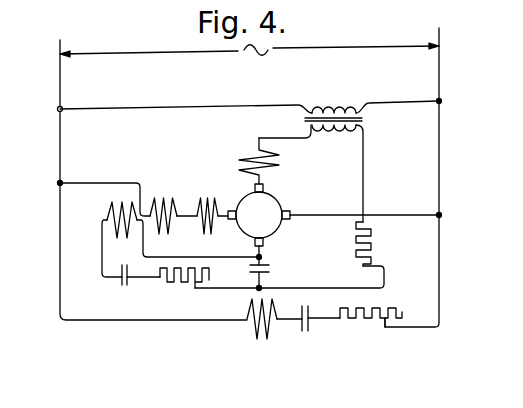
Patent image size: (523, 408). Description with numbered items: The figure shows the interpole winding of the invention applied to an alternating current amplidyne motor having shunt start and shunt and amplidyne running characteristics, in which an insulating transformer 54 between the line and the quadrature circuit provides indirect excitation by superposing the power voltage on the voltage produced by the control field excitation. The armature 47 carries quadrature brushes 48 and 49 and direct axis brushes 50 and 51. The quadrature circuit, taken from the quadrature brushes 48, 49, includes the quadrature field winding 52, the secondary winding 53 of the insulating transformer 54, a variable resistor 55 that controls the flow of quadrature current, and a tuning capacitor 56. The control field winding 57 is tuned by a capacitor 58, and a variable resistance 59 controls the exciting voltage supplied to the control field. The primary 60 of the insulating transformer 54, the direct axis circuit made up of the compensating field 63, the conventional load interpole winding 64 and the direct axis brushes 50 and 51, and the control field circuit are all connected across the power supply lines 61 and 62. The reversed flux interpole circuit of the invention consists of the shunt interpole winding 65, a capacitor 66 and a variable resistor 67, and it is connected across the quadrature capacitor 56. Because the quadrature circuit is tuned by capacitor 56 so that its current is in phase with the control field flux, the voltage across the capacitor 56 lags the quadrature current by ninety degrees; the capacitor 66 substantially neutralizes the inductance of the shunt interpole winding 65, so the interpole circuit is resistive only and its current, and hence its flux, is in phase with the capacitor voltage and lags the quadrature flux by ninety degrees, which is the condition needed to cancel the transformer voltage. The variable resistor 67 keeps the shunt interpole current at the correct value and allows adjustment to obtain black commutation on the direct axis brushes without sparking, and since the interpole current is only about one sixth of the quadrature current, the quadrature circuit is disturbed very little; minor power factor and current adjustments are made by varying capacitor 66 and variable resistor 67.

The armature 47 is at (259, 215).
The quadrature brush 48 is at (264, 188).
The quadrature brush 49 is at (264, 242).
The direct axis brush 50 is at (223, 206).
The direct axis brush 51 is at (294, 206).
The quadrature field winding 52 is at (246, 166).
The secondary winding 53 is at (328, 141).
The insulating transformer 54 is at (249, 153).
The variable resistor 55 is at (372, 253).
The tuning capacitor 56 is at (271, 269).
The control field winding 57 is at (259, 343).
The capacitor 58 is at (304, 336).
The variable resistance 59 is at (385, 330).
The primary 60 is at (334, 98).
The power supply line 61 is at (56, 109).
The power supply line 62 is at (451, 100).
The compensating field 63 is at (158, 201).
The load interpole winding 64 is at (198, 201).
The shunt interpole winding 65 is at (120, 241).
The capacitor 66 is at (124, 289).
The variable resistor 67 is at (191, 286).